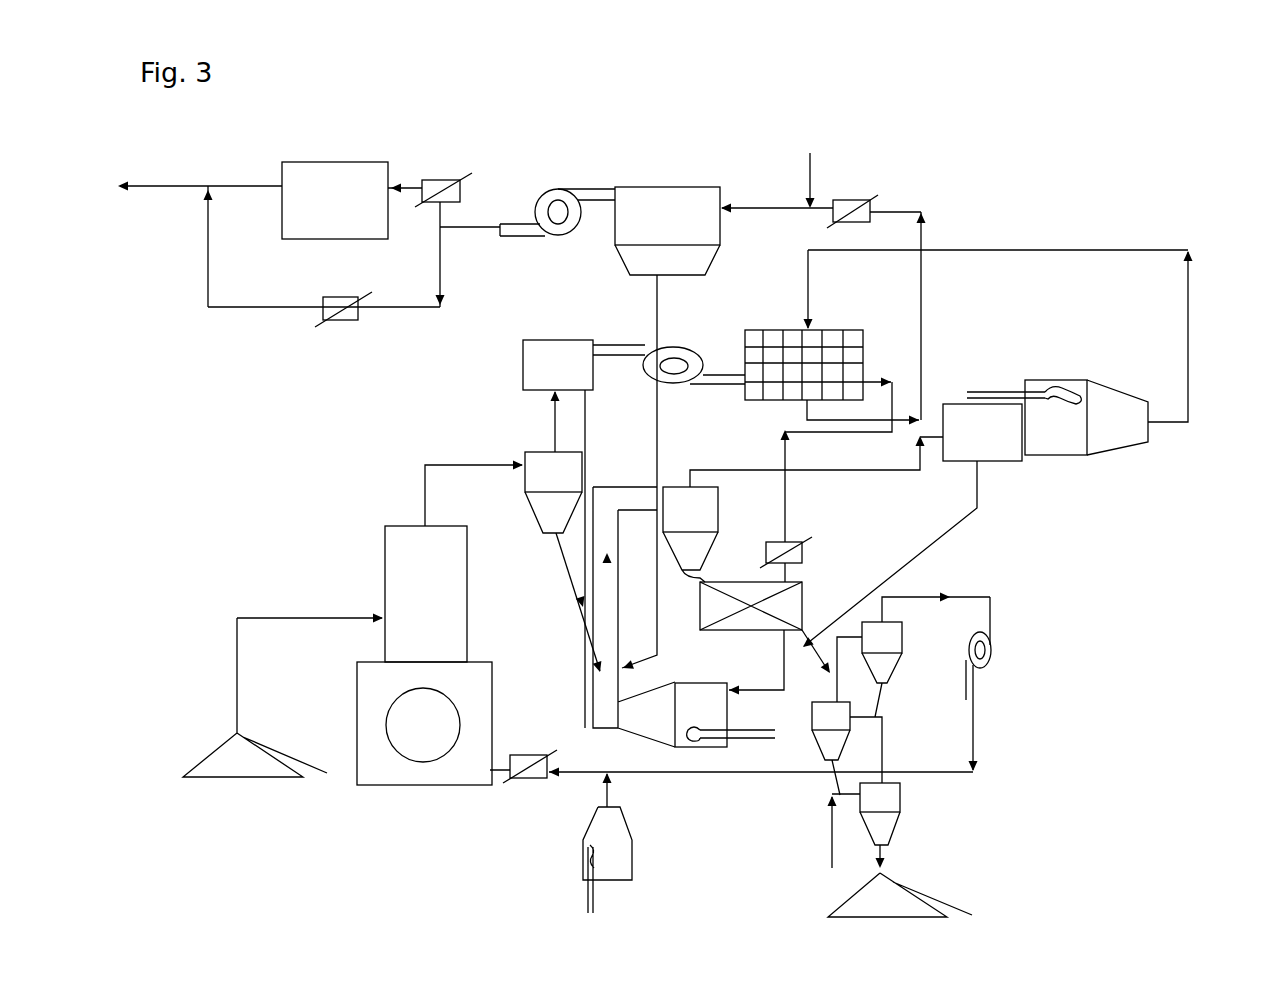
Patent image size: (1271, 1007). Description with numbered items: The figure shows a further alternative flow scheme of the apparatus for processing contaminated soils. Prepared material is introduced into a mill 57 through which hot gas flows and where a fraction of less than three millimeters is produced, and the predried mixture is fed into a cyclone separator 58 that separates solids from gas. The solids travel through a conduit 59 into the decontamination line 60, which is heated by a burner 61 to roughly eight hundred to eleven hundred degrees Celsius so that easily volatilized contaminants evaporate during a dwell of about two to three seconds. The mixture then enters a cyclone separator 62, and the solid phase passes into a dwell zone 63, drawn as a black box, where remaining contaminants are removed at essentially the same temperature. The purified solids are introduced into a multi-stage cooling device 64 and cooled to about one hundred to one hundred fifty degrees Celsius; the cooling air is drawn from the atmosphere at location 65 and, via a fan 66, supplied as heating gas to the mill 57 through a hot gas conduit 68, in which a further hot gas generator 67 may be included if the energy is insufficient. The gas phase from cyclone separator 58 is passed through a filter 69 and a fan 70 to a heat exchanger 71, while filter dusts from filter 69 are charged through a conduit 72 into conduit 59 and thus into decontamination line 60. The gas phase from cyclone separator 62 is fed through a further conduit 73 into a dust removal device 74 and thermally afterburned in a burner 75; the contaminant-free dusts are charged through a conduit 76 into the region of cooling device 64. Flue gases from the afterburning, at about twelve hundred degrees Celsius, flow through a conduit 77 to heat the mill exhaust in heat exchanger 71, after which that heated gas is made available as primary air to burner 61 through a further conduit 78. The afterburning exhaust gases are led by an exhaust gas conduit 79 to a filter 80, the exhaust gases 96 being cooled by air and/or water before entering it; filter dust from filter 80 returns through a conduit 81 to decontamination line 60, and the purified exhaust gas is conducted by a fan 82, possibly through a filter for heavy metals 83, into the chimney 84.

The mill 57 is at (383, 772).
The cyclone separator 58 is at (536, 463).
The conduit 59 is at (570, 580).
The decontamination line 60 is at (602, 692).
The burner 61 is at (657, 725).
The cyclone separator 62 is at (705, 510).
The dwell zone 63 is at (790, 598).
The multi-stage cooling device 64 is at (892, 638).
The location 65 is at (830, 797).
The fan 66 is at (990, 645).
The hot gas generator 67 is at (622, 863).
The hot gas conduit 68 is at (570, 777).
The filter 69 is at (532, 358).
The fan 70 is at (623, 347).
The heat exchanger 71 is at (830, 340).
The conduit 72 is at (588, 433).
The conduit 73 is at (708, 465).
The dust removal device 74 is at (955, 410).
The burner 75 is at (1047, 380).
The conduit 76 is at (937, 547).
The conduit 77 is at (1188, 313).
The conduit 78 is at (878, 378).
The exhaust gas conduit 79 is at (803, 408).
The filter 80 is at (707, 200).
The conduit 81 is at (658, 317).
The fan 82 is at (543, 195).
The filter for heavy metals 83 is at (358, 175).
The chimney 84 is at (130, 184).
The exhaust gases 96 is at (805, 200).